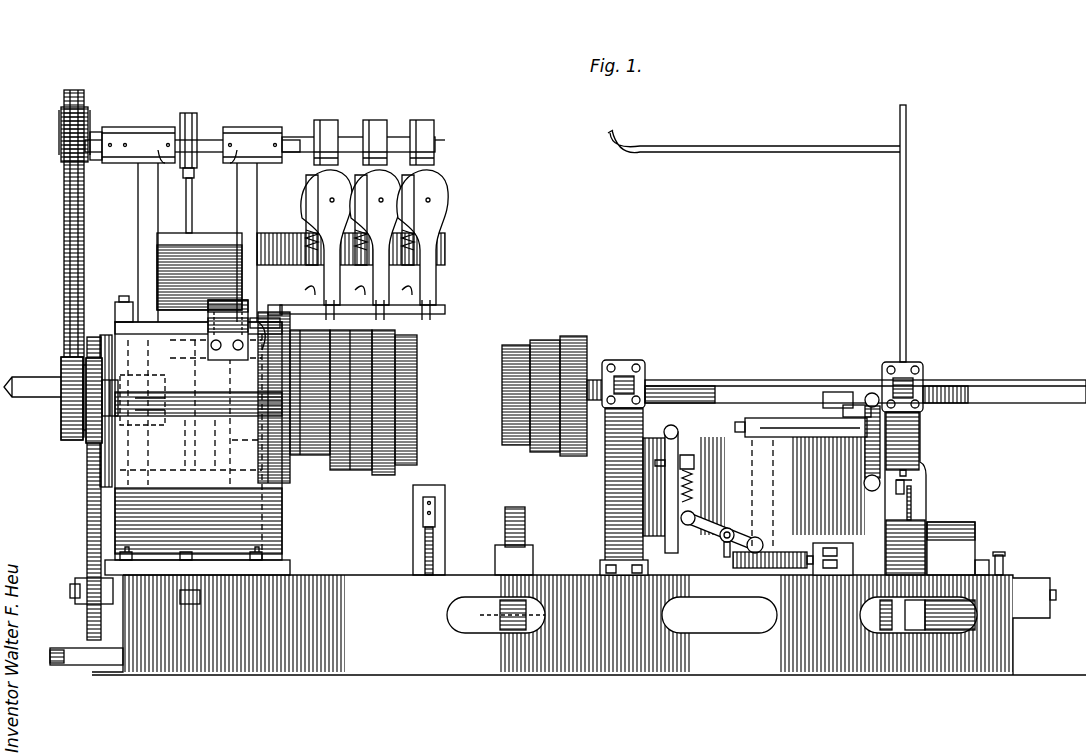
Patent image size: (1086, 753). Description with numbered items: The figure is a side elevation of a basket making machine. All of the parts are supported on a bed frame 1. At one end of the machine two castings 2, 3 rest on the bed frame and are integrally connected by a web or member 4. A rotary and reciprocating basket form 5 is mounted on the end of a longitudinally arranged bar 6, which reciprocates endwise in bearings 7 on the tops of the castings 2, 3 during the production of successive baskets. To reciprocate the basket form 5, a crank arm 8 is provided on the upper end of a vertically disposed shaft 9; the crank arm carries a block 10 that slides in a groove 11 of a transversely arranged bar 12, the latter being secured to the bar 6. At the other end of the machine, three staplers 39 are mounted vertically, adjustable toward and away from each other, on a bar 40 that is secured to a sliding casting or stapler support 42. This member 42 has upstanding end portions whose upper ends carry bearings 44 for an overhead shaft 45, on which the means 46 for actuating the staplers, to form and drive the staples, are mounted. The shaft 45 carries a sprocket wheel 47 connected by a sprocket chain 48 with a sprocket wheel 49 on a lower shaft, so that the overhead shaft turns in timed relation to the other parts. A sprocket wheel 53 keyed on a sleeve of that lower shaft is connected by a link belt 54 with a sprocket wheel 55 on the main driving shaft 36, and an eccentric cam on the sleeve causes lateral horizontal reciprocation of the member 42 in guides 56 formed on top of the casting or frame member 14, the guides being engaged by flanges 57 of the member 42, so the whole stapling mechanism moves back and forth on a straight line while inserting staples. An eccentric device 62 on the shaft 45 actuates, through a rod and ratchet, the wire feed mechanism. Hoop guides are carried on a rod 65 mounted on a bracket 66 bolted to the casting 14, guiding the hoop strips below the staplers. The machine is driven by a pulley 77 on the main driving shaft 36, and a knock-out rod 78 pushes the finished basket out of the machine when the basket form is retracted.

The bed frame 1 is at (589, 625).
The casting 2 is at (612, 496).
The casting 3 is at (912, 448).
The web or member 4 is at (722, 452).
The rotary and reciprocating basket form 5 is at (550, 348).
The longitudinally arranged bar 6 is at (796, 384).
The bearings 7 is at (622, 368).
The crank arm 8 is at (792, 424).
The vertically disposed shaft 9 is at (778, 485).
The block 10 is at (500, 122).
The groove 11 is at (870, 398).
The transversely arranged bar 12 is at (180, 122).
The casting or frame member 14 is at (265, 528).
The main driving shaft 36 is at (190, 597).
The staplers 39 is at (405, 276).
The bar 40 is at (276, 236).
The reciprocating or sliding casting or stapler support 42 is at (206, 240).
The bearings 44 is at (148, 128).
The overhead shaft 45 is at (400, 133).
The means for actuating the staplers 46 is at (352, 122).
The sprocket wheel 47 is at (65, 110).
The sprocket chain 48 is at (68, 290).
The sprocket wheel 49 is at (60, 392).
The sprocket wheel 53 is at (100, 400).
The link belt 54 is at (88, 527).
The sprocket wheel 55 is at (88, 603).
The guides 56 is at (118, 322).
The flanges 57 is at (148, 318).
The eccentric device 62 is at (196, 118).
The rod 65 is at (442, 306).
The bracket 66 is at (228, 349).
The pulley 77 is at (958, 524).
The knock-out rod 78 is at (36, 380).